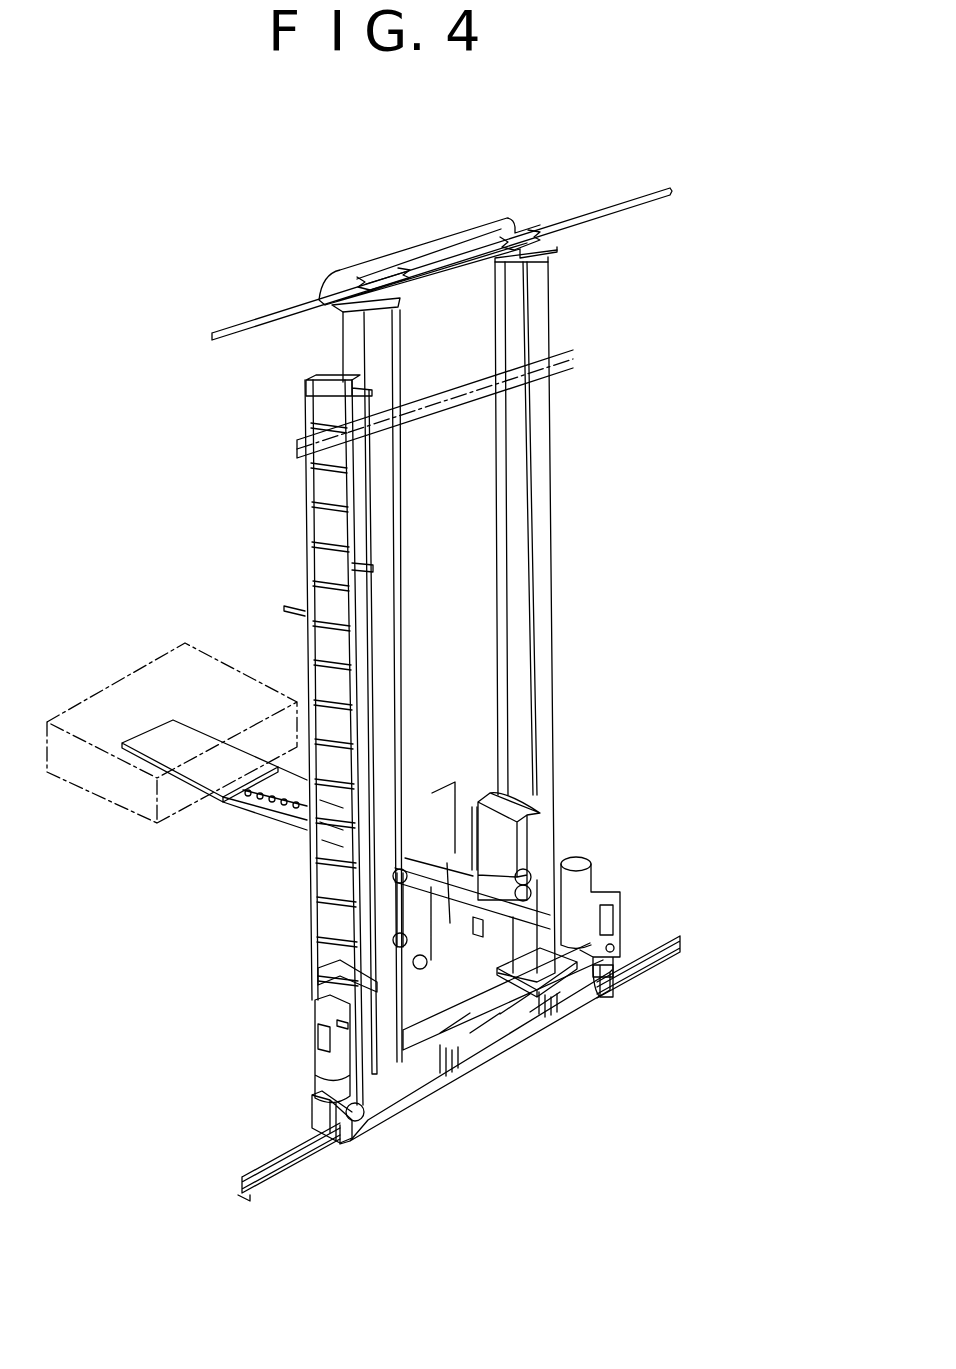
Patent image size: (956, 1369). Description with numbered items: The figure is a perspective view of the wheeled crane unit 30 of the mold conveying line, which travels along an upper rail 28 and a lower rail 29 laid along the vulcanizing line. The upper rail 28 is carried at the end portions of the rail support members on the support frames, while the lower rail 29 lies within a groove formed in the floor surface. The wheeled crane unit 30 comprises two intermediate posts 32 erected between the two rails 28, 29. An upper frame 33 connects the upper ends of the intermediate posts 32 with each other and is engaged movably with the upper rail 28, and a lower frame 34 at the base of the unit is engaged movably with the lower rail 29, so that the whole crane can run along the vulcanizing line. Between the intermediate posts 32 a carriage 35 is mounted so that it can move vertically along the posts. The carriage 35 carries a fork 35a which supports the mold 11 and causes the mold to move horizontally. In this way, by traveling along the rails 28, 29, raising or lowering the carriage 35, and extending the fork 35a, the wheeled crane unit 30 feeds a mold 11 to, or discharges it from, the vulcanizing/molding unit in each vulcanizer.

The mold 11 is at (125, 798).
The upper rail 28 is at (580, 218).
The lower rail 29 is at (315, 1165).
The wheeled crane unit 30 is at (452, 727).
The intermediate posts 32 is at (542, 688).
The upper frame 33 is at (385, 255).
The lower frame 34 is at (492, 1043).
The carriage 35 is at (518, 840).
The fork 35a is at (263, 817).